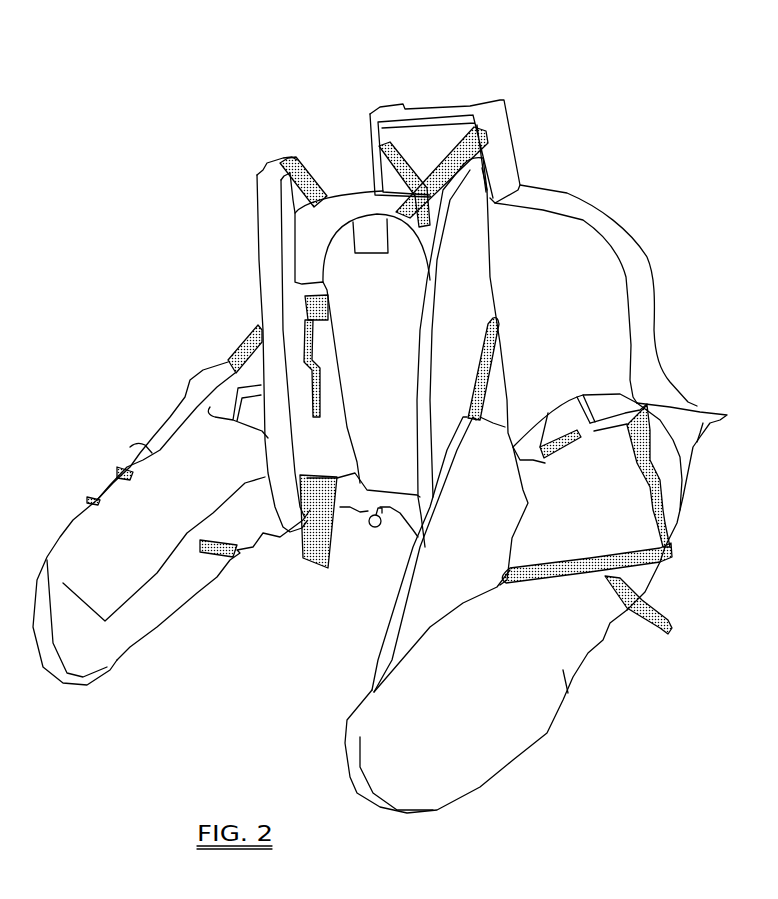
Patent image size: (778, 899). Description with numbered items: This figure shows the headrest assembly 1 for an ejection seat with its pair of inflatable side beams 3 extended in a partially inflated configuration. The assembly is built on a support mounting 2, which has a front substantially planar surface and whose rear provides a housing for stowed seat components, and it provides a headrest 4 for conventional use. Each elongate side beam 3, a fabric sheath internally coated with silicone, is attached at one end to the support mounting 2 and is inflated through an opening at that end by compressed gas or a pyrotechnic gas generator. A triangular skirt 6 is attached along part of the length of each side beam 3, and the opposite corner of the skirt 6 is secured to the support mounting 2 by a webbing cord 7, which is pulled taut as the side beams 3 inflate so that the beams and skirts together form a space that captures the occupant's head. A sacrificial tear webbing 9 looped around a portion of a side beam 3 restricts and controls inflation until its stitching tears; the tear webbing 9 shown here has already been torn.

The headrest assembly 1 is at (304, 101).
The support mounting 2 is at (512, 133).
The inflatable side beams 3 is at (97, 645).
The headrest 4 is at (395, 473).
The triangular skirt 6 is at (140, 550).
The webbing cord 7 is at (240, 340).
The tear webbing 9 is at (660, 610).